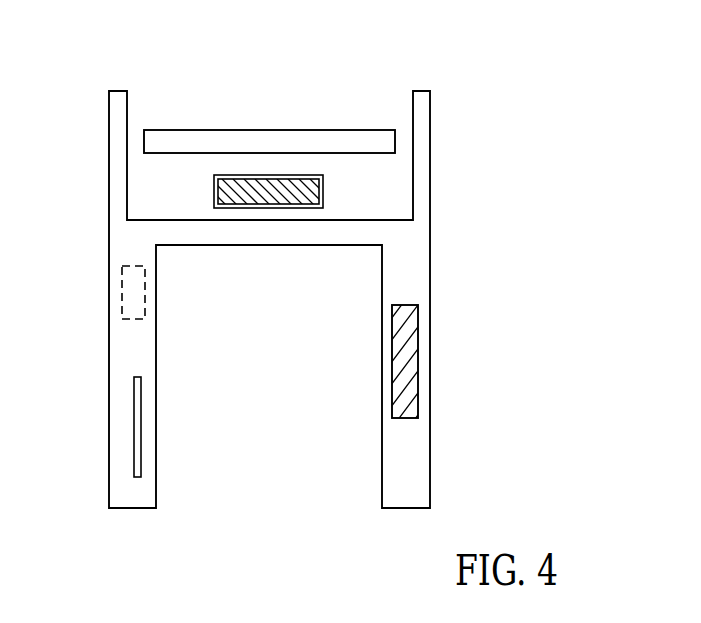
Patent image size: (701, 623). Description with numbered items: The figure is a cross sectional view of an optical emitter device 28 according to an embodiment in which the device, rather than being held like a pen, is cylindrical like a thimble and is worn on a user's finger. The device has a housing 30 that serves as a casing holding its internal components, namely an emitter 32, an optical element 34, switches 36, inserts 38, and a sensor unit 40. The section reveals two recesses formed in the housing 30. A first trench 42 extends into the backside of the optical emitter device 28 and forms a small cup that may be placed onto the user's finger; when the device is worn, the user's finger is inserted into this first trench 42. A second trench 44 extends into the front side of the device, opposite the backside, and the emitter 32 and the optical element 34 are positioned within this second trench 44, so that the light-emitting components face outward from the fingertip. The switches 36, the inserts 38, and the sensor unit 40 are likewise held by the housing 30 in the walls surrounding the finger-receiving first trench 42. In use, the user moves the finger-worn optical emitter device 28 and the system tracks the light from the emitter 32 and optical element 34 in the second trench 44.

The optical emitter device 28 is at (546, 110).
The housing 30 is at (130, 238).
The emitter 32 is at (268, 182).
The optical element 34 is at (301, 139).
The switches 36 is at (410, 343).
The inserts 38 is at (133, 415).
The sensor unit 40 is at (120, 302).
The first trench 42 is at (237, 488).
The second trench 44 is at (185, 74).